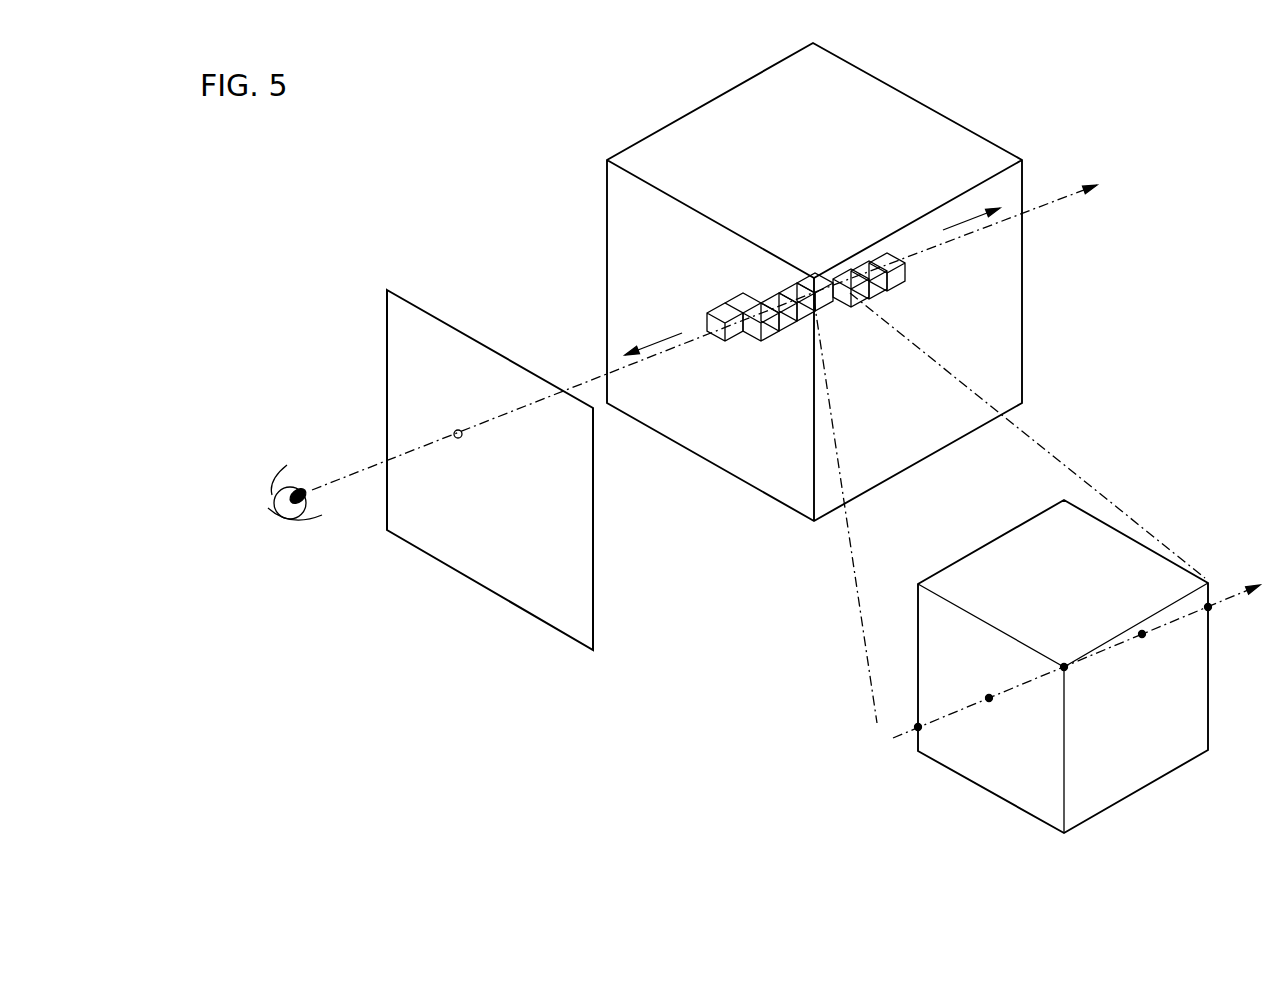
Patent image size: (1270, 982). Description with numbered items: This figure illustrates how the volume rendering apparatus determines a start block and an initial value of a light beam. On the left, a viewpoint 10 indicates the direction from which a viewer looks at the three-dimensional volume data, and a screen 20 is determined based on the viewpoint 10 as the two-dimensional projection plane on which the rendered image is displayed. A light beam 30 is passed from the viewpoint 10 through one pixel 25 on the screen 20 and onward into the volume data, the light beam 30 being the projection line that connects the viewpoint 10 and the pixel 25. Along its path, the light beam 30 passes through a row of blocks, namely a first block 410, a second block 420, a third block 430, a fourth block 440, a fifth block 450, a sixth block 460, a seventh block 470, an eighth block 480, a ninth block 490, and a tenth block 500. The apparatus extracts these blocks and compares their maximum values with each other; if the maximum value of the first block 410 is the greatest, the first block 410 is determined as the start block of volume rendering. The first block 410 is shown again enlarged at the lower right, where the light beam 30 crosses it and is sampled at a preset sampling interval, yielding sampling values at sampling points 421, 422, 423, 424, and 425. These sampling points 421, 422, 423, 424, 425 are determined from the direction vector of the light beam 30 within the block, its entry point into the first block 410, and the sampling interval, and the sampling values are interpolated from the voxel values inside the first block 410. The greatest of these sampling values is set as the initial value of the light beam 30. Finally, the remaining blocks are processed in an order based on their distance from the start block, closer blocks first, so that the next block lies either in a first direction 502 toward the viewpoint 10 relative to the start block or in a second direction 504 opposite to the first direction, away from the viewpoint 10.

The viewpoint 10 is at (278, 487).
The screen 20 is at (443, 322).
The pixel 25 is at (455, 430).
The light beam 30 is at (1048, 203).
The first block 410 is at (813, 274).
The second block 420 is at (797, 292).
The sampling point 421 is at (916, 730).
The sampling point 422 is at (989, 698).
The sampling point 423 is at (1064, 667).
The sampling point 424 is at (1142, 634).
The sampling point 425 is at (1208, 607).
The third block 430 is at (837, 312).
The fourth block 440 is at (785, 330).
The fifth block 450 is at (853, 307).
The sixth block 460 is at (770, 330).
The seventh block 470 is at (878, 292).
The eighth block 480 is at (738, 293).
The ninth block 490 is at (907, 273).
The tenth block 500 is at (720, 311).
The first direction 502 is at (655, 340).
The second direction 504 is at (970, 218).